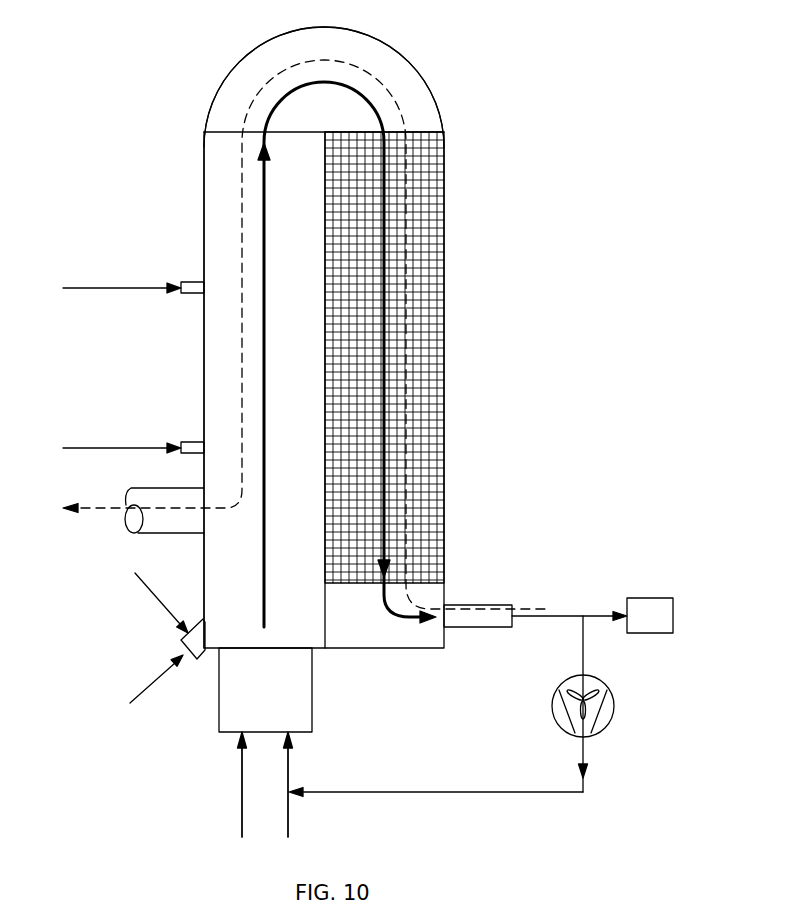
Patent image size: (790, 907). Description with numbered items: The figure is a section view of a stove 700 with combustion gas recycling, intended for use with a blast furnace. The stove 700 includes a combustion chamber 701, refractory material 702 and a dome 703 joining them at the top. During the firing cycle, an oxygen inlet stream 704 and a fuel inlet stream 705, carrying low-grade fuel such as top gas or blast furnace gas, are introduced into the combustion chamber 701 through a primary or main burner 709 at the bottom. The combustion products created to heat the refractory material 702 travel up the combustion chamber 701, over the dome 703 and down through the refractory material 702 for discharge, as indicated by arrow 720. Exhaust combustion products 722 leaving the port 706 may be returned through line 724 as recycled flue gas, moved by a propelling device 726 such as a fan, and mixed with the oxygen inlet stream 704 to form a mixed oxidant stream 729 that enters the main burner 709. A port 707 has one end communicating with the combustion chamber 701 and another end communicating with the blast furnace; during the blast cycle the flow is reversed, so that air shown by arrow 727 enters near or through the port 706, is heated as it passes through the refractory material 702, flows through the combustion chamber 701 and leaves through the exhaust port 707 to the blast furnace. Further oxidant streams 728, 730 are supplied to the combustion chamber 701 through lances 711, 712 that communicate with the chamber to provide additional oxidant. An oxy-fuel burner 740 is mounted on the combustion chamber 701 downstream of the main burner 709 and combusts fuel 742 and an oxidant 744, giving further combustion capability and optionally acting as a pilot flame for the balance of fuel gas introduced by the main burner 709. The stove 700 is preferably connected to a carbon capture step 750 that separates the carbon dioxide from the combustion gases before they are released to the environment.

The stove 700 is at (545, 275).
The combustion chamber 701 is at (226, 195).
The refractory material 702 is at (437, 383).
The dome 703 is at (411, 58).
The oxygen inlet stream 704 is at (290, 815).
The fuel inlet stream 705 is at (240, 792).
The port 706 is at (478, 627).
The port 707 is at (173, 533).
The main burner 709 is at (214, 709).
The lance 711 is at (181, 445).
The lance 712 is at (181, 285).
The arrow 720 is at (264, 230).
The exhaust combustion products 722 is at (548, 617).
The line 724 is at (583, 655).
The propelling device 726 is at (614, 700).
The arrow 727 is at (108, 508).
The further oxidant stream 728 is at (82, 448).
The mixed oxidant stream 729 is at (292, 734).
The further oxidant stream 730 is at (82, 288).
The oxy-fuel burner 740 is at (182, 640).
The fuel 742 is at (142, 692).
The oxidant 744 is at (146, 585).
The carbon capture step 750 is at (650, 598).